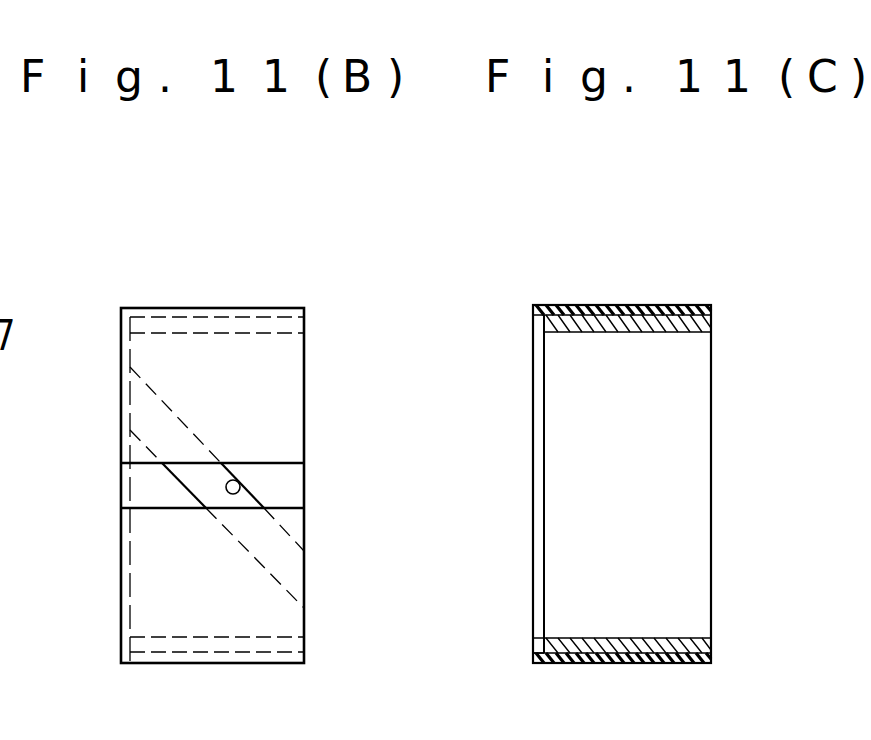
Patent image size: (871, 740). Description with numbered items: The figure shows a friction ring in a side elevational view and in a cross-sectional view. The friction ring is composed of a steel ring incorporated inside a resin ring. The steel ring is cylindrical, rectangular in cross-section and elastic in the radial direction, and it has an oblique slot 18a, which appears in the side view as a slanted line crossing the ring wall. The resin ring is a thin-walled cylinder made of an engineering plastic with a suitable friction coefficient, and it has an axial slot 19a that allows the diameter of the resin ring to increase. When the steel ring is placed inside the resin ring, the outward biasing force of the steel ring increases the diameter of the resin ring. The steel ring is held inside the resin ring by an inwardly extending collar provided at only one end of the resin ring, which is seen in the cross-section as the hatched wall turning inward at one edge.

The oblique slot 18a is at (348, 490).
The axial slot 19a is at (150, 508).